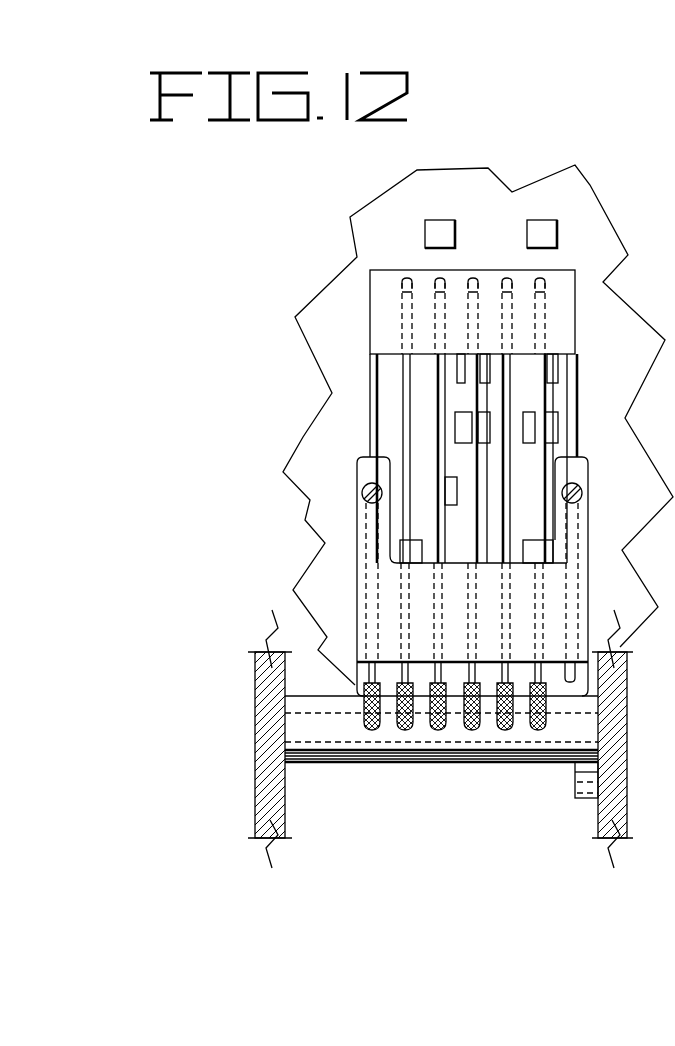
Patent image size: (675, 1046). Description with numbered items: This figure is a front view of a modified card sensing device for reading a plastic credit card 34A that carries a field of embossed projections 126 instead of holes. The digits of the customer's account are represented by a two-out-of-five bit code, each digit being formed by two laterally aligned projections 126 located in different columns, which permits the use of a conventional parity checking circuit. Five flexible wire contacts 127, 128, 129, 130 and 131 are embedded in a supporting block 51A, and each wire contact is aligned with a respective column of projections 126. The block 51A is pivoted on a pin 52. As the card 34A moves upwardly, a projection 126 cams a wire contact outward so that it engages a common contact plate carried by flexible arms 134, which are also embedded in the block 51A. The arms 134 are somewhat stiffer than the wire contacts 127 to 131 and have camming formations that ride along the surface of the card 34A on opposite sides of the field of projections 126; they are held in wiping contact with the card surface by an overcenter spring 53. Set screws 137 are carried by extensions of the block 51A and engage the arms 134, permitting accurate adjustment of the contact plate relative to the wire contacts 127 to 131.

The plastic credit card 34A is at (590, 185).
The embossed projections 126 is at (425, 222).
The flexible arms 134 is at (372, 362).
The flexible wire contact 127 is at (407, 395).
The flexible wire contact 128 is at (438, 417).
The flexible wire contact 129 is at (470, 438).
The flexible wire contact 130 is at (505, 457).
The flexible wire contact 131 is at (538, 465).
The set screws 137 is at (368, 497).
The supporting block 51A is at (588, 603).
The pin 52 is at (627, 725).
The overcenter spring 53 is at (573, 780).